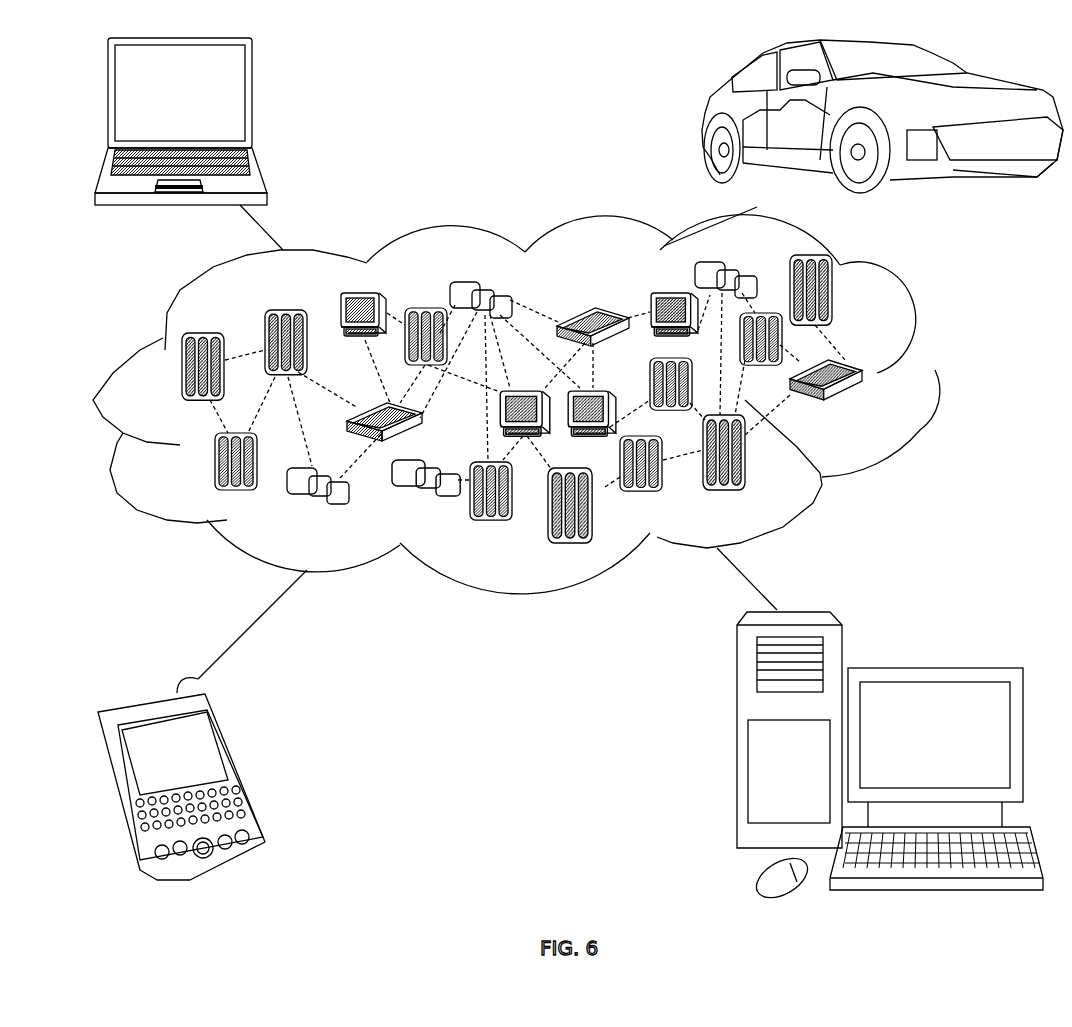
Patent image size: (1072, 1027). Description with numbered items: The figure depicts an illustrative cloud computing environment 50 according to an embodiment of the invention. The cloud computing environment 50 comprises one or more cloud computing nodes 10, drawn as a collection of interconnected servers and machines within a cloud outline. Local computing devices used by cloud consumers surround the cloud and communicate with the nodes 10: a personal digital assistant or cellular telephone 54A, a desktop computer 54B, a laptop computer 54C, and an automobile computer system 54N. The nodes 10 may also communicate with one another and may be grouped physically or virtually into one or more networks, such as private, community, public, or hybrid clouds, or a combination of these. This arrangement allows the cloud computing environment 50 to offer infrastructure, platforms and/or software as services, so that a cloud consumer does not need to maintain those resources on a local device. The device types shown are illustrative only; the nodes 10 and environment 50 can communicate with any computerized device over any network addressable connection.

The cloud computing environment 50 is at (932, 375).
The cloud computing node 10 is at (873, 408).
The personal digital assistant or cellular telephone 54A is at (240, 768).
The desktop computer 54B is at (922, 668).
The laptop computer 54C is at (252, 98).
The automobile computer system 54N is at (697, 114).